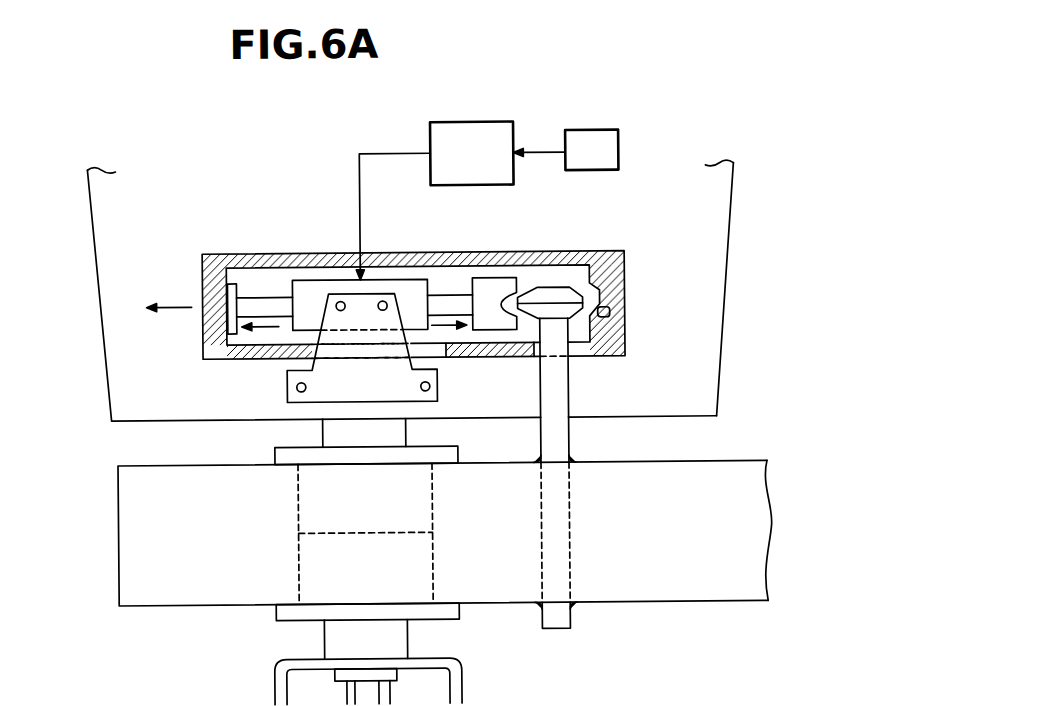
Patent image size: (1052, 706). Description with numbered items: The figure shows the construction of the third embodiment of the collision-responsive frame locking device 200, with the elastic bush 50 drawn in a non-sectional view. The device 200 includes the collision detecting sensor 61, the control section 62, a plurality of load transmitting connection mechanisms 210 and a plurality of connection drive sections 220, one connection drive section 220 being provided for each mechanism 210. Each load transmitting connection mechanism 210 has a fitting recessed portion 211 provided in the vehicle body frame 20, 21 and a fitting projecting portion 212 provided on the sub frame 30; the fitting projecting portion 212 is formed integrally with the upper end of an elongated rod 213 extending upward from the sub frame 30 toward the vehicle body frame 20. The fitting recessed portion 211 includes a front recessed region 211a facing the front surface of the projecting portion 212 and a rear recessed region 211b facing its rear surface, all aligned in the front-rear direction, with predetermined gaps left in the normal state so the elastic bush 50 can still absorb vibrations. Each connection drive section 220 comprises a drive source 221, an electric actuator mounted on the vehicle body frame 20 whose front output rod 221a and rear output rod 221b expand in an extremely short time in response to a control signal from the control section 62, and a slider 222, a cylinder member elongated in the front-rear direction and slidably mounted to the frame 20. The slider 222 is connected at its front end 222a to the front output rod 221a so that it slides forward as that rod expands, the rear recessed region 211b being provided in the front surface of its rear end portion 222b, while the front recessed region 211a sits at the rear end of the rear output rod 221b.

The collision-responsive frame locking device 200 is at (145, 138).
The vehicle body frame 20 is at (738, 198).
The frame wall 21 is at (724, 289).
The control section 62 is at (481, 148).
The collision detecting sensor 61 is at (591, 146).
The connection drive section 220 is at (342, 175).
The slider 222 is at (239, 244).
The front end of slider 222a is at (219, 294).
The rear end portion of slider 222b is at (612, 266).
The drive source 221 is at (319, 300).
The front output rod 221a is at (243, 307).
The rear output rod 221b is at (450, 309).
The fitting recessed portion 211 is at (824, 236).
The front recessed region 211a is at (586, 303).
The rear recessed region 211b is at (600, 316).
The load transmitting connection mechanism 210 is at (574, 361).
The fitting projecting portion 212 is at (553, 332).
The elongated rod 213 is at (571, 447).
The sub frame 30 is at (772, 531).
The elastic bush 50 is at (286, 624).